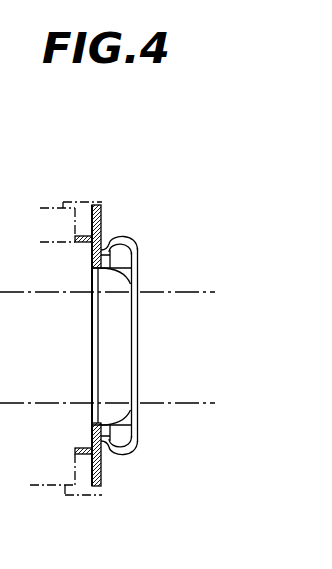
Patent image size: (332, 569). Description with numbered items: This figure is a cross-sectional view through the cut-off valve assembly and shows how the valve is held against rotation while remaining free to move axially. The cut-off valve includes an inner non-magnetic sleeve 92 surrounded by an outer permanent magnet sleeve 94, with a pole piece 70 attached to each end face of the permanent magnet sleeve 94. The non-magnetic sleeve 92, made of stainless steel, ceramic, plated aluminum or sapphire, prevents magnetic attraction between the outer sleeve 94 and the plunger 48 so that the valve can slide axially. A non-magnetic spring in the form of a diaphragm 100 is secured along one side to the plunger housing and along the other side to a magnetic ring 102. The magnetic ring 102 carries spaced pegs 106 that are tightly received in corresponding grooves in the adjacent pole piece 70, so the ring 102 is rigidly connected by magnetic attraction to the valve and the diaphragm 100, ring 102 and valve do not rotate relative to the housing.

The plunger 48 is at (212, 375).
The pole piece 70 is at (94, 204).
The inner non-magnetic sleeve 92 is at (58, 401).
The outer permanent magnet sleeve 94 is at (50, 233).
The diaphragm 100 is at (140, 250).
The magnetic ring 102 is at (91, 339).
The peg 106 is at (78, 244).